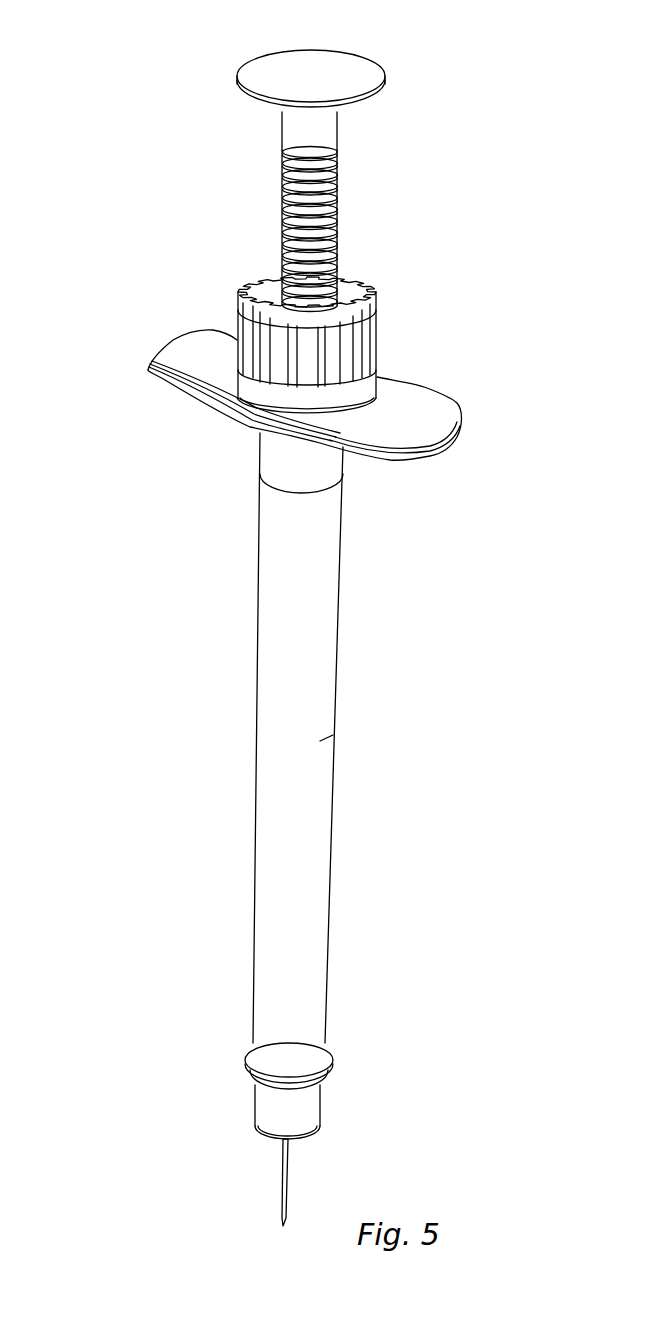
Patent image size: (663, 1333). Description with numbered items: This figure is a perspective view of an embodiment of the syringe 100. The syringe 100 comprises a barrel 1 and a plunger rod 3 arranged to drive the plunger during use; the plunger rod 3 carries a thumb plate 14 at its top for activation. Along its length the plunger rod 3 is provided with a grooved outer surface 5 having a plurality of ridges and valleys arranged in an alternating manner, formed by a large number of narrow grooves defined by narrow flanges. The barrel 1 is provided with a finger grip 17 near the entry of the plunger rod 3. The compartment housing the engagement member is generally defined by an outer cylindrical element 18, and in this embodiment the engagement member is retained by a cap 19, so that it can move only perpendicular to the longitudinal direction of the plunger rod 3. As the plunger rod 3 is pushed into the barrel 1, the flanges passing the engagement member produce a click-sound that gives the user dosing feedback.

The syringe 100 is at (157, 94).
The thumb plate 14 is at (348, 72).
The plunger rod 3 is at (336, 198).
The grooved outer surface 5 is at (334, 234).
The cap 19 is at (362, 296).
The finger grip 17 is at (447, 410).
The barrel 1 is at (327, 646).
The outer cylindrical element 18 is at (285, 1172).